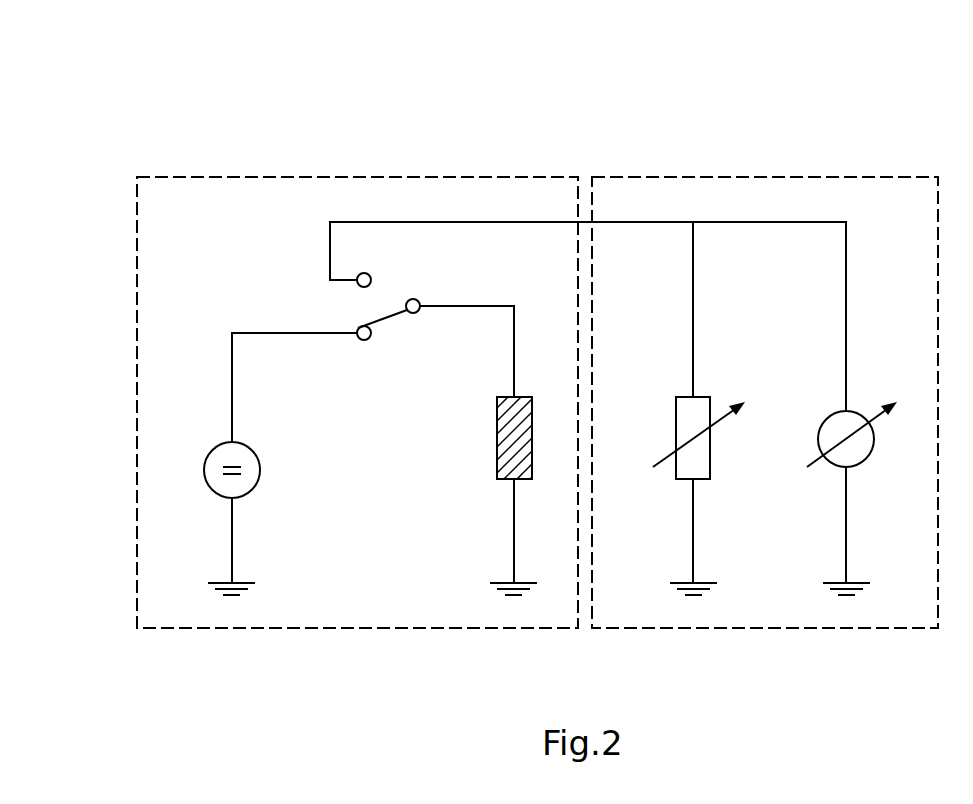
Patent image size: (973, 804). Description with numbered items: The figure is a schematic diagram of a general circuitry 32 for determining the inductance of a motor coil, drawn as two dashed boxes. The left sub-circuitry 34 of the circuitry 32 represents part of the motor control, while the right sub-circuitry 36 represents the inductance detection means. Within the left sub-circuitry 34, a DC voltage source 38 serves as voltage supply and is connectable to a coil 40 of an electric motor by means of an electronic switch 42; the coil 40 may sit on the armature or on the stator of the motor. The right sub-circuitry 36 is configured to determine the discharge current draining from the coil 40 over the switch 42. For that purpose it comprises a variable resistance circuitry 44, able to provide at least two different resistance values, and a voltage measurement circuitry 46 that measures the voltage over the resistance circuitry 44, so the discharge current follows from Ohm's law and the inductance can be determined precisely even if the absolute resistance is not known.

The general circuitry 32 is at (283, 121).
The left sub-circuitry 34 is at (470, 177).
The right sub-circuitry 36 is at (860, 177).
The DC voltage source 38 is at (215, 444).
The coil 40 is at (497, 430).
The electronic switch 42 is at (388, 318).
The variable resistance circuitry 44 is at (676, 417).
The voltage measurement circuitry 46 is at (833, 415).